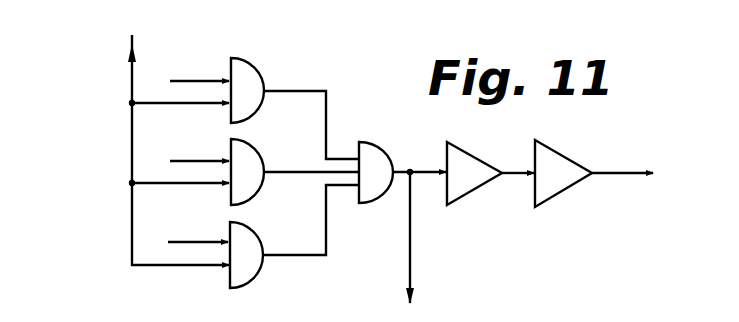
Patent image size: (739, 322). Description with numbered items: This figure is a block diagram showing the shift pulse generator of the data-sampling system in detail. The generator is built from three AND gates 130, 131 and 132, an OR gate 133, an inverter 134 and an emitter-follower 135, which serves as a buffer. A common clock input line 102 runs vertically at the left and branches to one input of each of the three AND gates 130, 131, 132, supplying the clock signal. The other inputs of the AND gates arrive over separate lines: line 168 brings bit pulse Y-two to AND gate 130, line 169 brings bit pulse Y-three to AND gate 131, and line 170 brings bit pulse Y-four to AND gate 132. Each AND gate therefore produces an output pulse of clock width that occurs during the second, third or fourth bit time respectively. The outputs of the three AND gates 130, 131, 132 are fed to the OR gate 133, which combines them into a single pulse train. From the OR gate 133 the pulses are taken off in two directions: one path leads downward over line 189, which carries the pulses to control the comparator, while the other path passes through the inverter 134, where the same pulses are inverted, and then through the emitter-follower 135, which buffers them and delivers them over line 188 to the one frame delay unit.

The input signal line 102 is at (132, 82).
The line 168 is at (187, 80).
The line 169 is at (197, 159).
The line 170 is at (188, 240).
The AND gate 130 is at (253, 106).
The AND gate 131 is at (248, 190).
The AND gate 132 is at (248, 268).
The OR gate 133 is at (372, 197).
The inverter 134 is at (463, 197).
The emitter-follower 135 is at (552, 188).
The line 188 is at (630, 178).
The line 189 is at (410, 262).